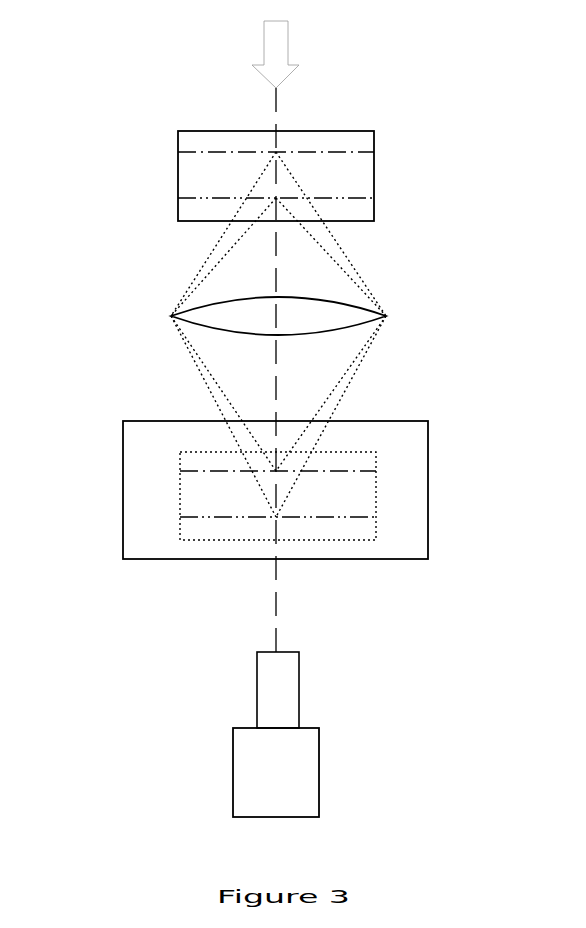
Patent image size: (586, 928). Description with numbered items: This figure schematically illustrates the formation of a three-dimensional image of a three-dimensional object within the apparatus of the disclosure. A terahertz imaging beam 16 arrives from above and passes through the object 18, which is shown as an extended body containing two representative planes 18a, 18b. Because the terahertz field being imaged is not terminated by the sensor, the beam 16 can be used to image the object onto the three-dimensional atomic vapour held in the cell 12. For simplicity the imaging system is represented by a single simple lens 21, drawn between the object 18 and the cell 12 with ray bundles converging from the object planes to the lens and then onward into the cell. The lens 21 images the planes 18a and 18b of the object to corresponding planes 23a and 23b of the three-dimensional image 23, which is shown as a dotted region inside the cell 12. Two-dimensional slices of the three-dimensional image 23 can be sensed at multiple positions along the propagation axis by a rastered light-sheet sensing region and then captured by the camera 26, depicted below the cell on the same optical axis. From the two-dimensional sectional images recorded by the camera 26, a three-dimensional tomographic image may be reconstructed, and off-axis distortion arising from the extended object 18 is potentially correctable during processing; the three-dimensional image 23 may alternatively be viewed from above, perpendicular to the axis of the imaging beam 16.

The terahertz imaging beam 16 is at (276, 50).
The object 18 is at (178, 174).
The plane of the object 18a is at (353, 153).
The plane of the object 18b is at (353, 198).
The lens 21 is at (172, 316).
The cell 12 is at (123, 482).
The 3D image 23 is at (376, 540).
The plane of the 3D image 23a is at (343, 470).
The plane of the 3D image 23b is at (353, 517).
The camera 26 is at (233, 740).